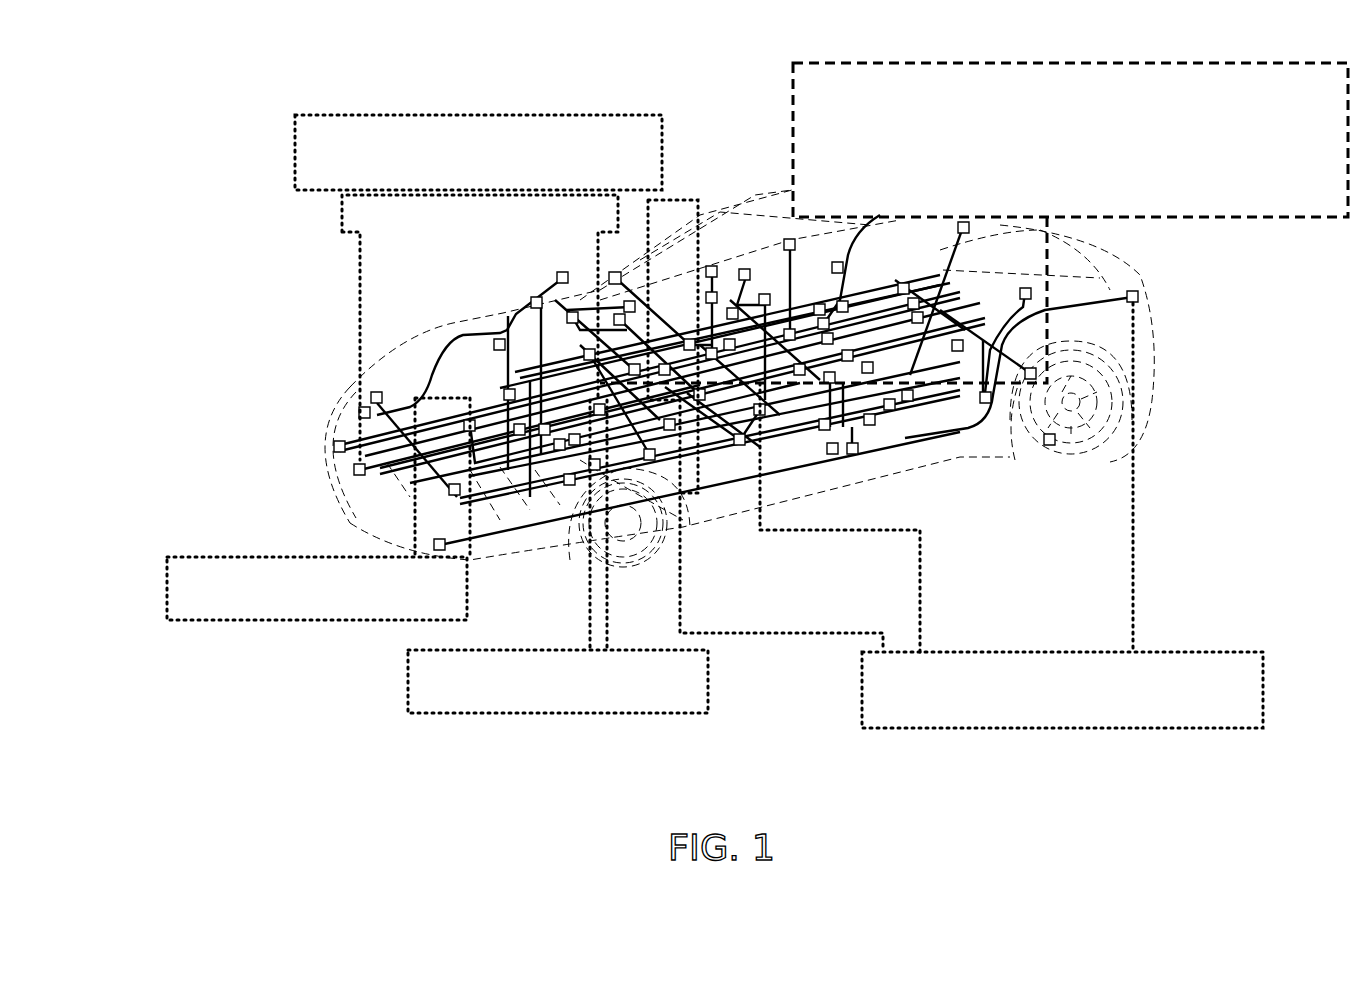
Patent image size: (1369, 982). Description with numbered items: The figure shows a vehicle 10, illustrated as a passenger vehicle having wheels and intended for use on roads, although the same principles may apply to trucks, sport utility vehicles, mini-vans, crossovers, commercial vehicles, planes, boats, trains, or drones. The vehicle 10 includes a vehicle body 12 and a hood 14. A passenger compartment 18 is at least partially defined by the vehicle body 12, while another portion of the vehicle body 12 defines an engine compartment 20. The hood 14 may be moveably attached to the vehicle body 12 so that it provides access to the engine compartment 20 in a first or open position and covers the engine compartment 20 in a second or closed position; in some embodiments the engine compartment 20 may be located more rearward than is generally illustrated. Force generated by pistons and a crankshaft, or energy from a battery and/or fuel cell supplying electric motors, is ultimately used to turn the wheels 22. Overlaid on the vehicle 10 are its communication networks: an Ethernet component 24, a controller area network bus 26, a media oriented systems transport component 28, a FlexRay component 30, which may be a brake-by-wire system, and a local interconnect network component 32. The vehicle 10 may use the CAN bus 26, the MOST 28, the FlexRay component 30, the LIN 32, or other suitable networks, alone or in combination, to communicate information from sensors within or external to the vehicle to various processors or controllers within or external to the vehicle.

The vehicle 10 is at (113, 209).
The vehicle body 12 is at (826, 375).
The hood 14 is at (450, 338).
The passenger compartment 18 is at (605, 278).
The engine compartment 20 is at (298, 401).
The wheels 22 is at (568, 553).
The Ethernet component 24 is at (143, 585).
The controller area network (CAN) bus 26 is at (272, 148).
The media oriented systems transport component (MOST) 28 is at (773, 124).
The FlexRay component 30 is at (378, 676).
The local interconnect network component (LIN) 32 is at (843, 678).